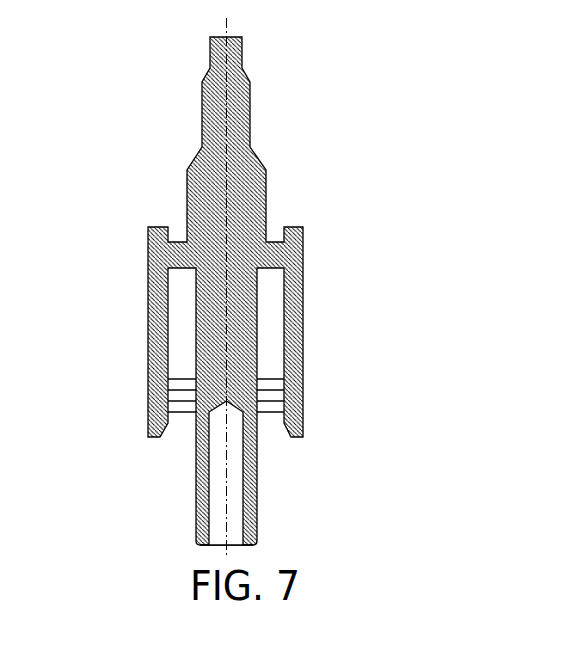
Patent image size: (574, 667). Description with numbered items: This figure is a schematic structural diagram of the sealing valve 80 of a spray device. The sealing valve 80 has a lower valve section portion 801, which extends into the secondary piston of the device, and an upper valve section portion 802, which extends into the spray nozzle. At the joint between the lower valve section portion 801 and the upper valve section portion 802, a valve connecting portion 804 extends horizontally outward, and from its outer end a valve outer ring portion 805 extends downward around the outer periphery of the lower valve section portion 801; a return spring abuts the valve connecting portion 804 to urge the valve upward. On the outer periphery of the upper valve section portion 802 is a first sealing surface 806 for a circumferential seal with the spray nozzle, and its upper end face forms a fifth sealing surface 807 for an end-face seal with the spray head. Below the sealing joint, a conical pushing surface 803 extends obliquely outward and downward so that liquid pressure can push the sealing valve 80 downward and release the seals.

The sealing valve 80 is at (160, 100).
The lower valve section portion 801 is at (257, 487).
The upper valve section portion 802 is at (240, 114).
The pushing surface 803 is at (256, 158).
The valve connecting portion 804 is at (272, 254).
The valve outer ring portion 805 is at (295, 330).
The first sealing surface 806 is at (250, 92).
The fifth sealing surface 807 is at (230, 36).